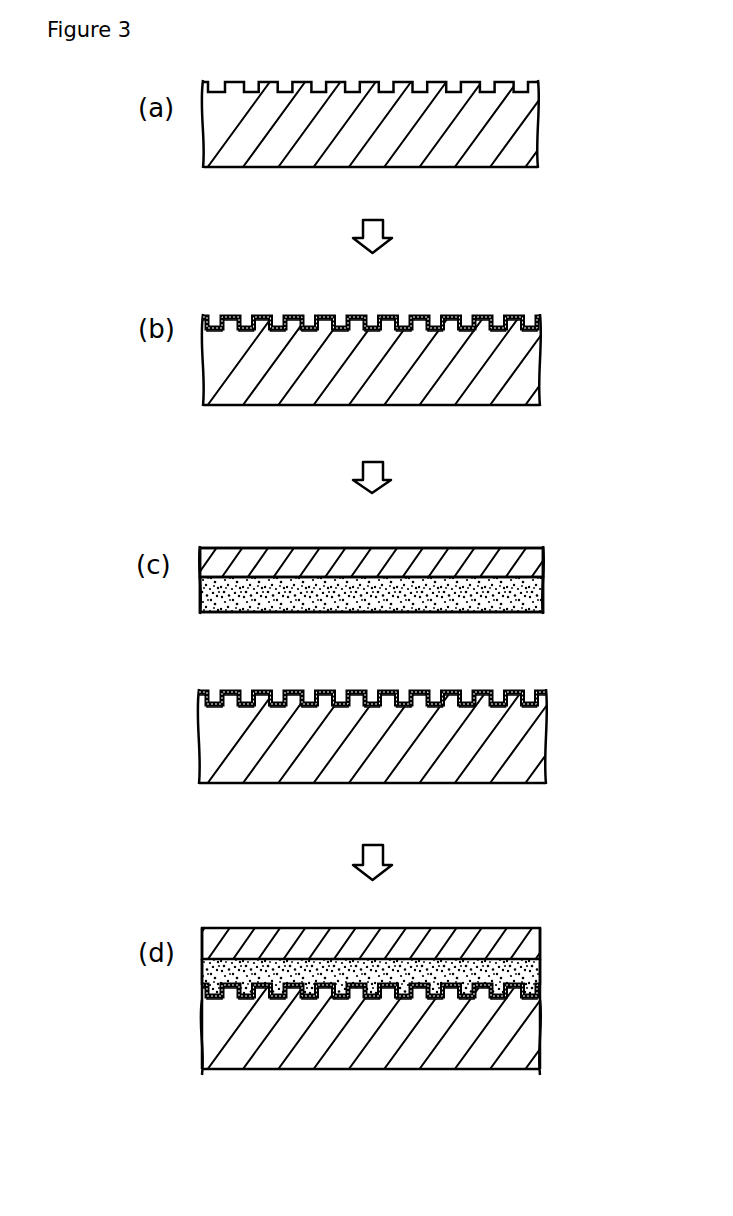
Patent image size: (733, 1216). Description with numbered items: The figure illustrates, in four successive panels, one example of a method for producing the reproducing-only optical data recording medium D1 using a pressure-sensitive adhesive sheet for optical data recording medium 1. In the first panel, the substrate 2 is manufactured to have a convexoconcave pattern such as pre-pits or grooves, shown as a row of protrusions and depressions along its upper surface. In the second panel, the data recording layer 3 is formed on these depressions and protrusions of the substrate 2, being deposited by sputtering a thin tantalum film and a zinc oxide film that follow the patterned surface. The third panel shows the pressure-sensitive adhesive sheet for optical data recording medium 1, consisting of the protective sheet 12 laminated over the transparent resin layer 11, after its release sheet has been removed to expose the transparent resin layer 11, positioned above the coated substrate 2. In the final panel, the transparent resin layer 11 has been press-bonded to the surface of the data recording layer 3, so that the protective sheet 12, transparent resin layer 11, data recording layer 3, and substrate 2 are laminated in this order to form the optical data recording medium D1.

The pressure-sensitive adhesive sheet for optical data recording medium 1 is at (251, 541).
The substrate 2 is at (532, 140).
The data recording layer 3 is at (481, 316).
The transparent resin layer 11 is at (541, 598).
The protective sheet 12 is at (512, 548).
The optical data recording medium D1 is at (254, 1092).